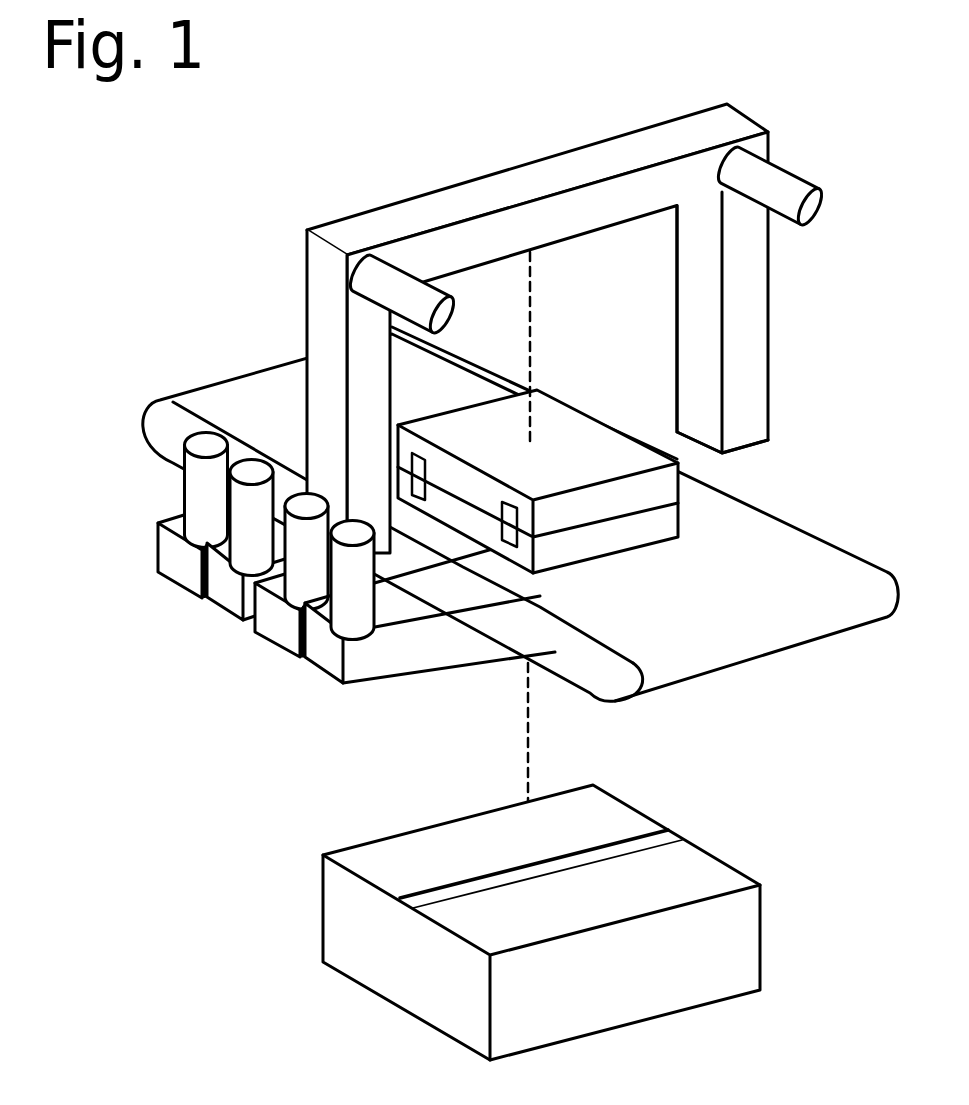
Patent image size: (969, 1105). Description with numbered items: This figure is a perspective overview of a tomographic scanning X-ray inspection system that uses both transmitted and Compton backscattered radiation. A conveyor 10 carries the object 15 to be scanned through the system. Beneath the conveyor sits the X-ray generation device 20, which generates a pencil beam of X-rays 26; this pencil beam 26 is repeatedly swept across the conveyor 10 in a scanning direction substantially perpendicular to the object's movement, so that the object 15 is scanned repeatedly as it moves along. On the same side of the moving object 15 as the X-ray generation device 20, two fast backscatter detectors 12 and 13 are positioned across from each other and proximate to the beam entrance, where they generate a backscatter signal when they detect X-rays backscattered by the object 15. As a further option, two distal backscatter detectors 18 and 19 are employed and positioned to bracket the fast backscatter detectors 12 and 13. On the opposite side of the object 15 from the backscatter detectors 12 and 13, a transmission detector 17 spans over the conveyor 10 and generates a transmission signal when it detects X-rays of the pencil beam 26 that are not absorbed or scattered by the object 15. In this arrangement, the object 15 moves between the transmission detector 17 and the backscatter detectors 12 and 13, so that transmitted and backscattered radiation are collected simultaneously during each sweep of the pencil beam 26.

The conveyor 10 is at (256, 364).
The transmission detector 17 is at (577, 168).
The pencil beam of X-rays 26 is at (523, 339).
The object 15 is at (665, 517).
The distal backscatter detector 19 is at (183, 561).
The fast backscatter detector 13 is at (225, 588).
The fast backscatter detector 12 is at (273, 619).
The distal backscatter detector 18 is at (327, 647).
The X-ray generation device 20 is at (347, 937).